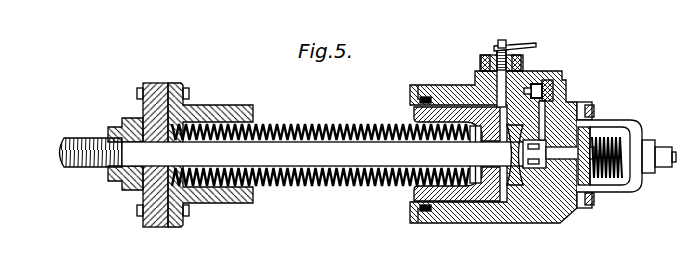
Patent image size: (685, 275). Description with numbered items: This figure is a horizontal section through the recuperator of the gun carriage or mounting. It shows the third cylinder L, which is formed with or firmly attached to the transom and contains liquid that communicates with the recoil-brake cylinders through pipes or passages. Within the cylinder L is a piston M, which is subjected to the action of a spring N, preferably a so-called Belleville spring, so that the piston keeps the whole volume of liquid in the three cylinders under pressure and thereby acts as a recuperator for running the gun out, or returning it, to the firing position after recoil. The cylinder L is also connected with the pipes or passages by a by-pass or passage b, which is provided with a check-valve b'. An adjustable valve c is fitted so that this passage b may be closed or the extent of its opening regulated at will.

The spring N is at (320, 146).
The third cylinder L is at (502, 159).
The piston M is at (457, 154).
The adjustable valve c is at (507, 70).
The by-pass passage b is at (537, 90).
The check-valve b' is at (567, 89).